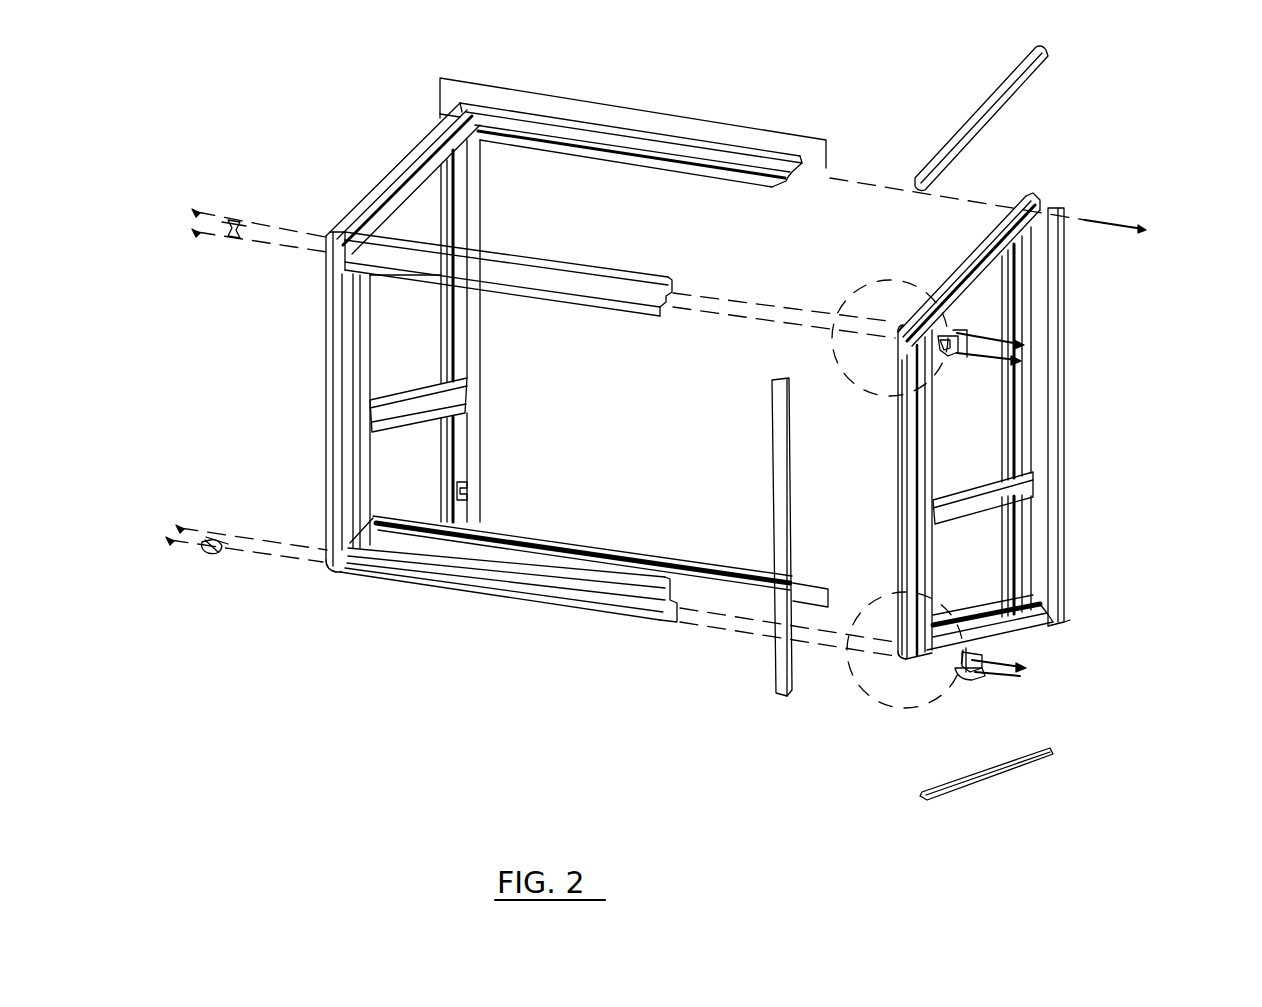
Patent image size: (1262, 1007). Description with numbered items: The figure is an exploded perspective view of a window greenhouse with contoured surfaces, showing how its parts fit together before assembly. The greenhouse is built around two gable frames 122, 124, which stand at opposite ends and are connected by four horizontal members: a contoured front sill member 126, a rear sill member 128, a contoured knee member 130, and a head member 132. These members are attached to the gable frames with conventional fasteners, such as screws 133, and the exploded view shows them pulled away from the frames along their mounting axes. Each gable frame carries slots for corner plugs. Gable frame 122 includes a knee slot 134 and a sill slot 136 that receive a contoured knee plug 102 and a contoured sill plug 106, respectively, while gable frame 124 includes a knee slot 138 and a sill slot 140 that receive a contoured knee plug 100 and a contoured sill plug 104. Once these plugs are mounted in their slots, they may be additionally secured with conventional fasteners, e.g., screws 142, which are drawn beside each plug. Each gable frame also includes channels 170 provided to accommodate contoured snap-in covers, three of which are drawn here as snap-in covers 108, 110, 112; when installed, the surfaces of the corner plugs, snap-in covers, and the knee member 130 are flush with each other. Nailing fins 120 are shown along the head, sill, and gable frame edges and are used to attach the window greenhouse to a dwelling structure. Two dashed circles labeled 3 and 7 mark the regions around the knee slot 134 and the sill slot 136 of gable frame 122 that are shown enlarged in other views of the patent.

The contoured knee plug 100 is at (232, 205).
The contoured knee plug 102 is at (935, 372).
The contoured sill plug 104 is at (206, 562).
The contoured sill plug 106 is at (970, 683).
The contoured snap-in cover 108 is at (990, 115).
The contoured snap-in cover 110 is at (770, 660).
The contoured snap-in cover 112 is at (1010, 760).
The nailing fin 120 is at (578, 110).
The gable frame 122 is at (1090, 483).
The gable frame 124 is at (305, 388).
The contoured front sill member 126 is at (540, 590).
The rear sill member 128 is at (578, 547).
The contoured knee member 130 is at (600, 287).
The head member 132 is at (745, 160).
The screw 133 is at (1125, 225).
The knee slot 134 is at (895, 320).
The sill slot 136 is at (900, 672).
The knee slot 138 is at (322, 230).
The sill slot 140 is at (318, 567).
The screw 142 is at (196, 250).
The channel 170 is at (968, 268).
The section 3 detail circle 3 is at (840, 372).
The section 7 detail circle 7 is at (850, 690).